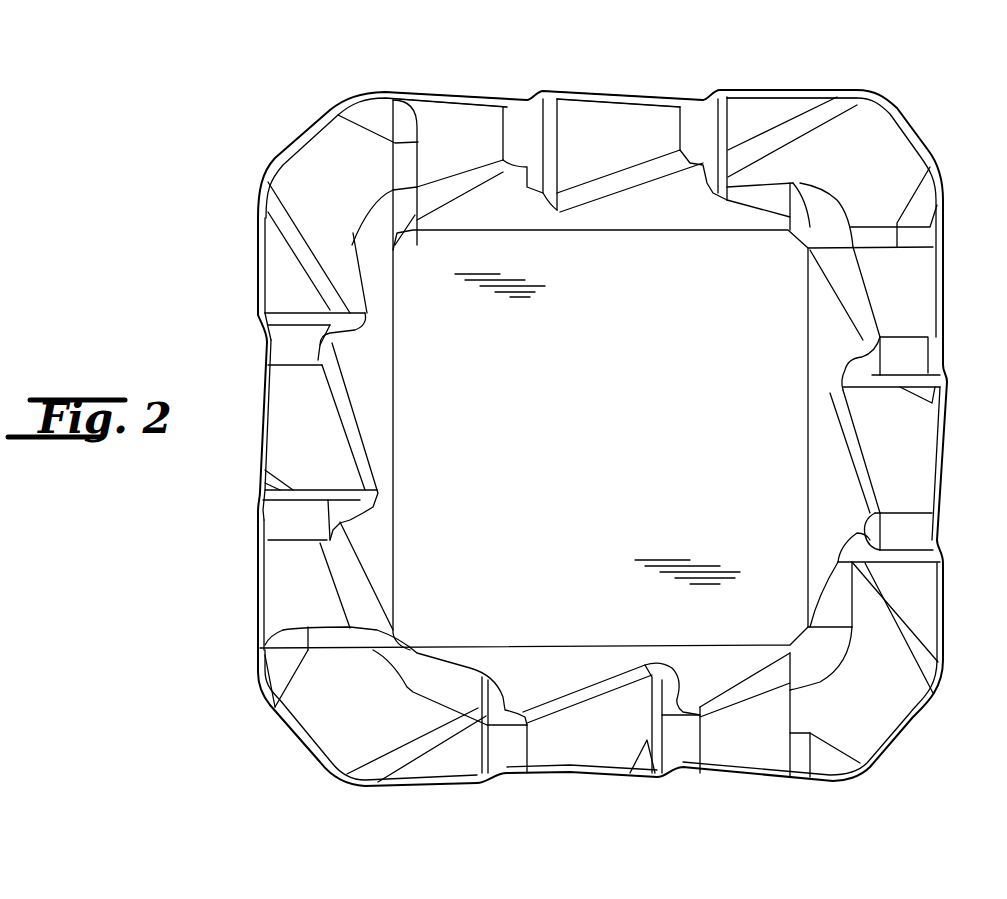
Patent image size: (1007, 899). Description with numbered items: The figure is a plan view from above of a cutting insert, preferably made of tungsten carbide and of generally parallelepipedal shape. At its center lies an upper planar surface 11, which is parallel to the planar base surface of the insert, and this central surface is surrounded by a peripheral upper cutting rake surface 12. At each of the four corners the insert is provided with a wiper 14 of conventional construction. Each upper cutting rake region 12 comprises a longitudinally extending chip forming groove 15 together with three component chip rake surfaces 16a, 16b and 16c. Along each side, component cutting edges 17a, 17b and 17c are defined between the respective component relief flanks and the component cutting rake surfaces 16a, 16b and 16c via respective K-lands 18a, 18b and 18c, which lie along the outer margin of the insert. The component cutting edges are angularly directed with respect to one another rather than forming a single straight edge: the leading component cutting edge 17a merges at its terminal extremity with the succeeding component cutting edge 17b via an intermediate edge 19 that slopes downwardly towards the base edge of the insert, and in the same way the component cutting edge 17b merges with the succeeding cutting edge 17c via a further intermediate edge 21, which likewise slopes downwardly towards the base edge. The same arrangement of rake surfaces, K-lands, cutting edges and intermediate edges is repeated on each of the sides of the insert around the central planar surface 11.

The central upper planar surface 11 is at (603, 444).
The peripheral upper cutting rake surface 12 is at (367, 397).
The wiper 14 is at (897, 127).
The chip forming groove 15 is at (657, 203).
The component chip rake surface 16a is at (780, 110).
The component chip rake surface 16b is at (617, 110).
The component chip rake surface 16c is at (447, 100).
The leading component cutting edge 17a is at (755, 90).
The component cutting edge 17b is at (583, 93).
The component cutting edge 17c is at (422, 93).
The K-land 18a is at (823, 97).
The K-land 18b is at (660, 100).
The K-land 18c is at (490, 100).
The intermediate edge 19 is at (702, 110).
The intermediate edge 21 is at (523, 110).